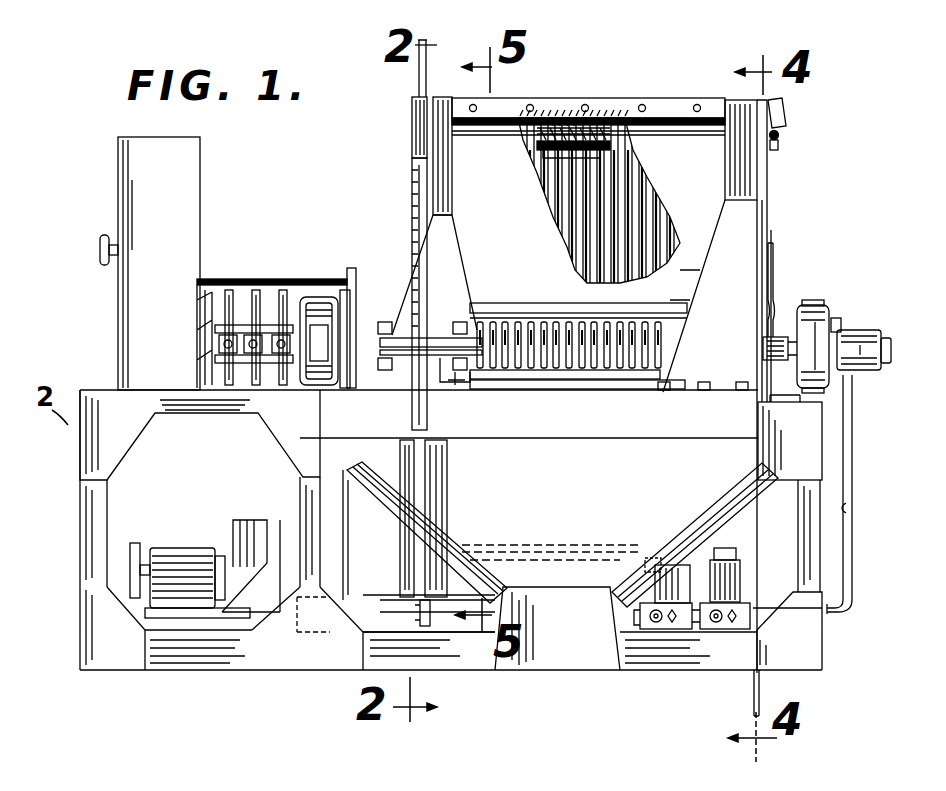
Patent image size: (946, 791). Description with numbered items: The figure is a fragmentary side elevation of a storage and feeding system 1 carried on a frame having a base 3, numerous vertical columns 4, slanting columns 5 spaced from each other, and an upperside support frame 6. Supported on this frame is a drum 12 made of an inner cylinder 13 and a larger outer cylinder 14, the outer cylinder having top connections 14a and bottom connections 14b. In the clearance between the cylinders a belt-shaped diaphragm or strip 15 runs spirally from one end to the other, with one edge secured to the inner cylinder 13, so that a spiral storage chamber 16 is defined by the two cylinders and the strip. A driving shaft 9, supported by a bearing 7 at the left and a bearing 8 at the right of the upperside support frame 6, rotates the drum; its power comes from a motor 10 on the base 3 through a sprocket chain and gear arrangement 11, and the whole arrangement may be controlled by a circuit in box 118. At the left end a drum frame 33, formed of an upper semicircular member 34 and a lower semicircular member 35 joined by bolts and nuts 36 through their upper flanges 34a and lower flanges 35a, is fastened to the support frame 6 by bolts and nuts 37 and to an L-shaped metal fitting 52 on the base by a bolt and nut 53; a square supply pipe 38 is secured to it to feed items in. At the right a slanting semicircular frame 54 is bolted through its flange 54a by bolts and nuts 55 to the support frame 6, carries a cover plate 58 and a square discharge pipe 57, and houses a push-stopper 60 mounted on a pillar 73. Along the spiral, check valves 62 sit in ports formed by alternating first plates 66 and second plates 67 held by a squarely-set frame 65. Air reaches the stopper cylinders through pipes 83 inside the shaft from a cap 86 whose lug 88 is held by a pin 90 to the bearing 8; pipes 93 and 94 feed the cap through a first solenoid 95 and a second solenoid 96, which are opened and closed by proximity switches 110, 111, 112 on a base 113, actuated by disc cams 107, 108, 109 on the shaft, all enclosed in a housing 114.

The storage and feeding system 1 is at (892, 150).
The base 3 is at (451, 647).
The vertical columns 4 is at (82, 531).
The slanting columns 5 is at (455, 548).
The upperside support frame 6 is at (601, 432).
The bearing 7 is at (326, 353).
The bearing 8 is at (804, 306).
The driving shaft 9 is at (763, 348).
The motor 10 is at (202, 550).
The sprocket chain and gear arrangement 11 is at (356, 282).
The drum 12 is at (585, 204).
The inner cylinder 13 is at (537, 151).
The outer cylinder 14 is at (665, 113).
The top connections 14a is at (598, 116).
The bottom connections 14b is at (592, 586).
The belt-shaped diaphragm or strip 15 is at (634, 180).
The storage chamber 16 is at (571, 118).
The drum frame 33 is at (440, 64).
The upper semicircular member 34 is at (424, 144).
The upper flanges 34a is at (436, 338).
The lower semicircular member 35 is at (400, 446).
The lower flanges 35a is at (407, 356).
The bolts and nuts 36 is at (463, 300).
The bolts and nuts 37 is at (441, 386).
The supply pipe 38 is at (418, 70).
The L-shaped metal fitting 52 is at (445, 633).
The bolt and nut 53 is at (418, 615).
The slanting semicircular frame 54 is at (747, 213).
The flange 54a is at (766, 229).
The bolts and nuts 55 is at (700, 392).
The discharge pipe 57 is at (752, 704).
The cover plate 58 is at (768, 168).
The push-stopper 60 is at (784, 106).
The check valves 62 is at (650, 333).
The squarely-set frame 65 is at (514, 303).
The first plate 66 is at (481, 380).
The second plate 67 is at (506, 360).
The pillar 73 is at (779, 135).
The pipes 83 is at (776, 256).
The cap 86 is at (874, 367).
The lug 88 is at (842, 324).
The pin 90 is at (840, 318).
The pipe 93 is at (853, 458).
The pipe 94 is at (846, 507).
The first solenoid 95 is at (733, 563).
The second solenoid 96 is at (633, 560).
The disc cam 107 is at (229, 290).
The disc cam 108 is at (256, 290).
The disc cam 109 is at (283, 290).
The proximity switch 110 is at (226, 353).
The proximity switch 111 is at (251, 353).
The proximity switch 112 is at (279, 353).
The base 113 is at (288, 360).
The housing 114 is at (333, 278).
The box 118 is at (172, 164).